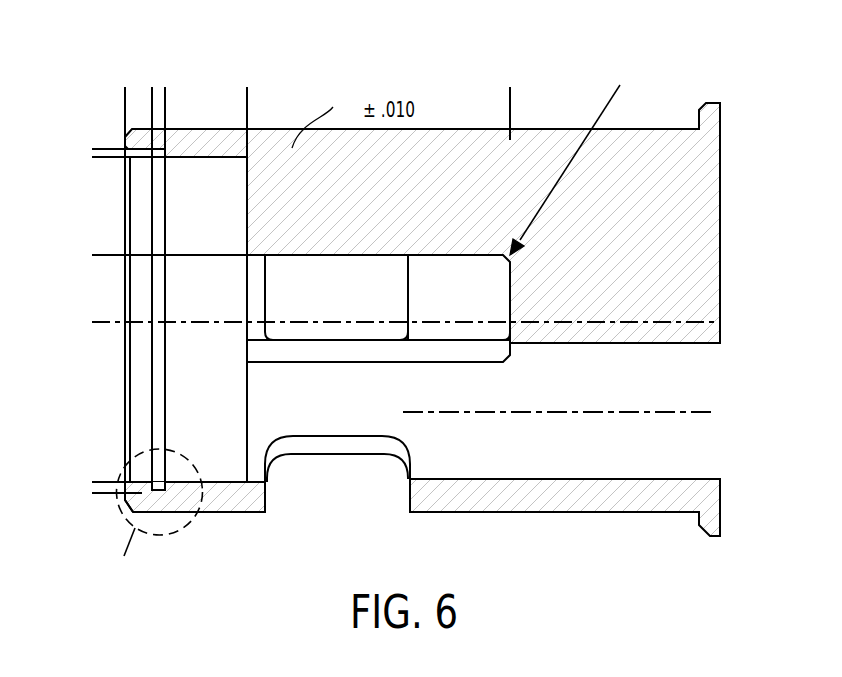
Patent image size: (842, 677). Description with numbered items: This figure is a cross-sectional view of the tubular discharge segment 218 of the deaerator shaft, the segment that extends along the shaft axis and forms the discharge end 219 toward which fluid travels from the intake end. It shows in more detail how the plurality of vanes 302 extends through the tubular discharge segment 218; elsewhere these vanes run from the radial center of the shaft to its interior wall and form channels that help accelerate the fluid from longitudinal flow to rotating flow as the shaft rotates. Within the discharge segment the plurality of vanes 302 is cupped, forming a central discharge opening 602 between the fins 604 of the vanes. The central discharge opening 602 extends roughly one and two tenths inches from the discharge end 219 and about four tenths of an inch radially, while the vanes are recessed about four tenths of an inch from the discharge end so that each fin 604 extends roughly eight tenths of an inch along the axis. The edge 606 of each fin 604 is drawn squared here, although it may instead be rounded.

The tubular discharge segment 218 is at (422, 105).
The discharge end 219 is at (107, 192).
The plurality of vanes 302 is at (697, 245).
The central discharge opening 602 is at (447, 302).
The fin 604 is at (250, 154).
The edge 606 is at (237, 255).